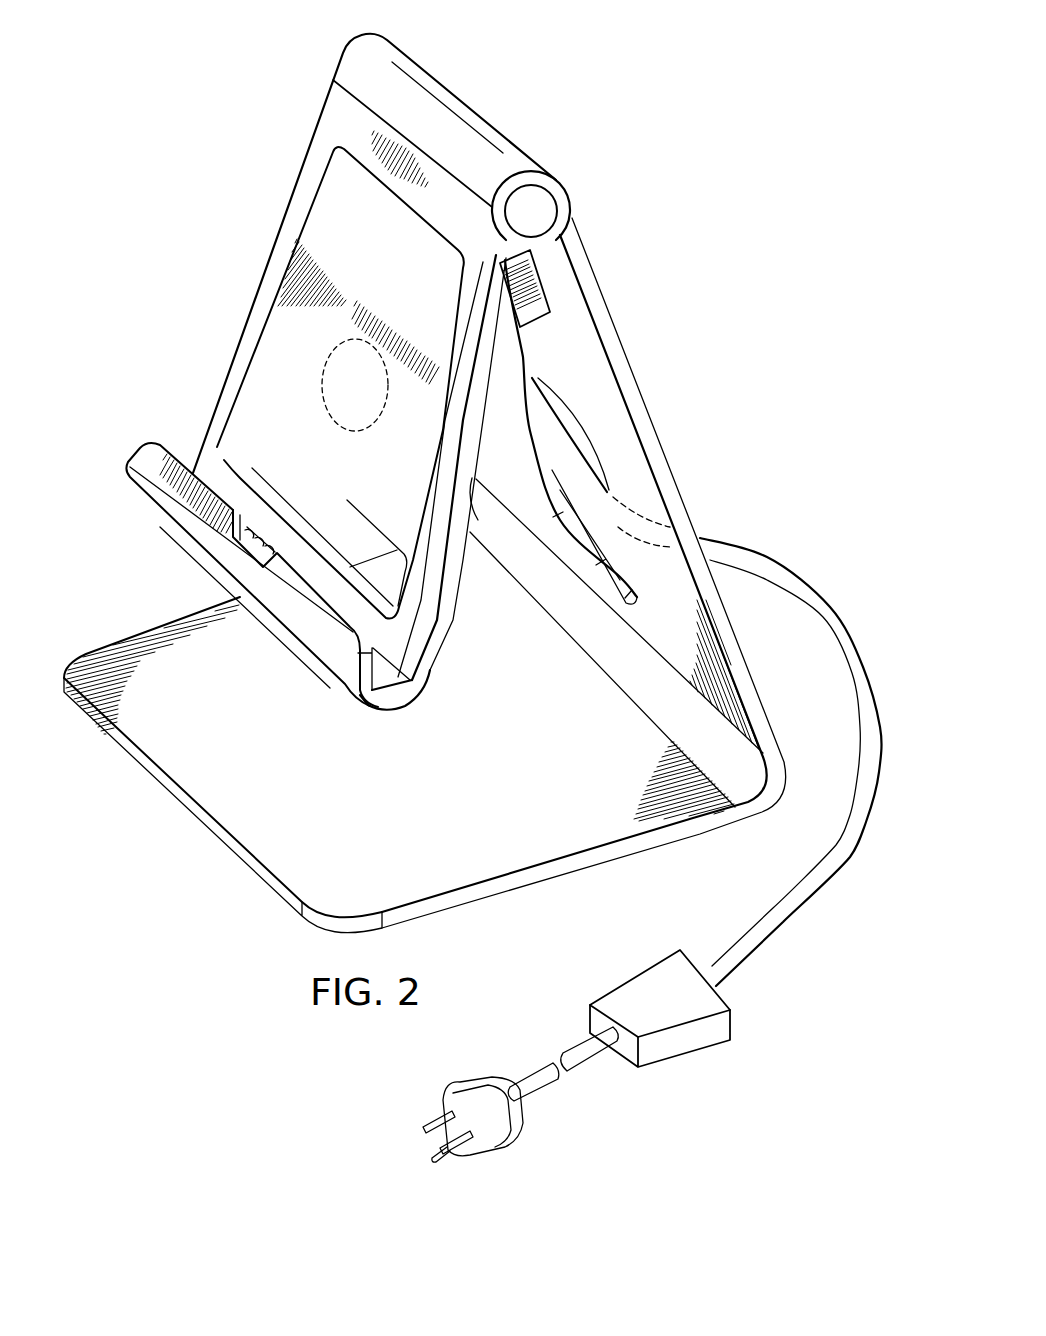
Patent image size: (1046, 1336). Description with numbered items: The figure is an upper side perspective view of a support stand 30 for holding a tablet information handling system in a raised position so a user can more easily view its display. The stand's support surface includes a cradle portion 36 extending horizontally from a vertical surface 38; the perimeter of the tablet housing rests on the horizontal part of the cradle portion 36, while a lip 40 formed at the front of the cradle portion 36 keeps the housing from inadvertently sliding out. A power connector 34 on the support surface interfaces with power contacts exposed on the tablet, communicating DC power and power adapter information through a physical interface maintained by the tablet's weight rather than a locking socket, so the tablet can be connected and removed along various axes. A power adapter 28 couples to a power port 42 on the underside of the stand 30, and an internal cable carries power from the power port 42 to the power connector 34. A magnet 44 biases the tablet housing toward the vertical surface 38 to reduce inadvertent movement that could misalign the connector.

The power adapter 28 is at (683, 1043).
The support stand 30 is at (542, 88).
The power connector 34 is at (263, 540).
The cradle portion 36 is at (390, 707).
The vertical surface 38 is at (330, 200).
The lip 40 is at (318, 613).
The power port 42 is at (532, 320).
The magnet 44 is at (383, 425).